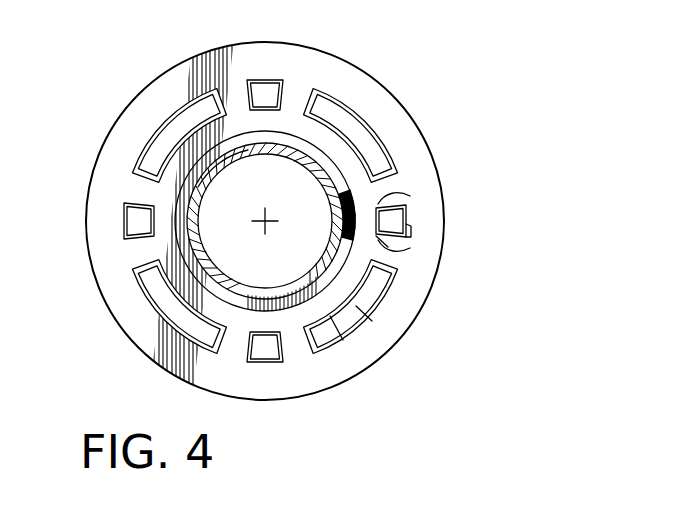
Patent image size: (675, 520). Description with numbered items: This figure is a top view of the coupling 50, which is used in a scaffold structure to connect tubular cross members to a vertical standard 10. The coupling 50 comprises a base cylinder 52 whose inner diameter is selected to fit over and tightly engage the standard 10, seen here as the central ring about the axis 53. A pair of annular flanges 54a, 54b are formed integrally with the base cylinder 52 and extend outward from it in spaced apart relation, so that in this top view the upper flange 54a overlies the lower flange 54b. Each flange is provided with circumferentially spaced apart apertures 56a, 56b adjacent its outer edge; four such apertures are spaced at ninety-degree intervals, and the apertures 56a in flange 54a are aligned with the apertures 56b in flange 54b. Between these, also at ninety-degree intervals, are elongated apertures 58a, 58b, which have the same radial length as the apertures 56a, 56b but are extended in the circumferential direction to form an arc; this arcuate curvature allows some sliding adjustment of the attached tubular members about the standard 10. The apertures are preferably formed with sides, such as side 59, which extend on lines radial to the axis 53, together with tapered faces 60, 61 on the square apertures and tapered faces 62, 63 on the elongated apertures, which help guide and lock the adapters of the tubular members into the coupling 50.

The standard 10 is at (196, 188).
The coupling 50 is at (136, 318).
The base cylinder 52 is at (392, 198).
The axis 53 is at (264, 221).
The annular flange 54a is at (378, 103).
The annular flange 54b is at (340, 97).
The aperture 56a is at (407, 222).
The aperture 56b is at (407, 207).
The elongated aperture 58a is at (377, 307).
The elongated aperture 58b is at (360, 327).
The side 59 is at (392, 205).
The tapered face 60 is at (410, 232).
The tapered face 61 is at (388, 247).
The tapered face 62 is at (374, 307).
The tapered face 63 is at (337, 322).